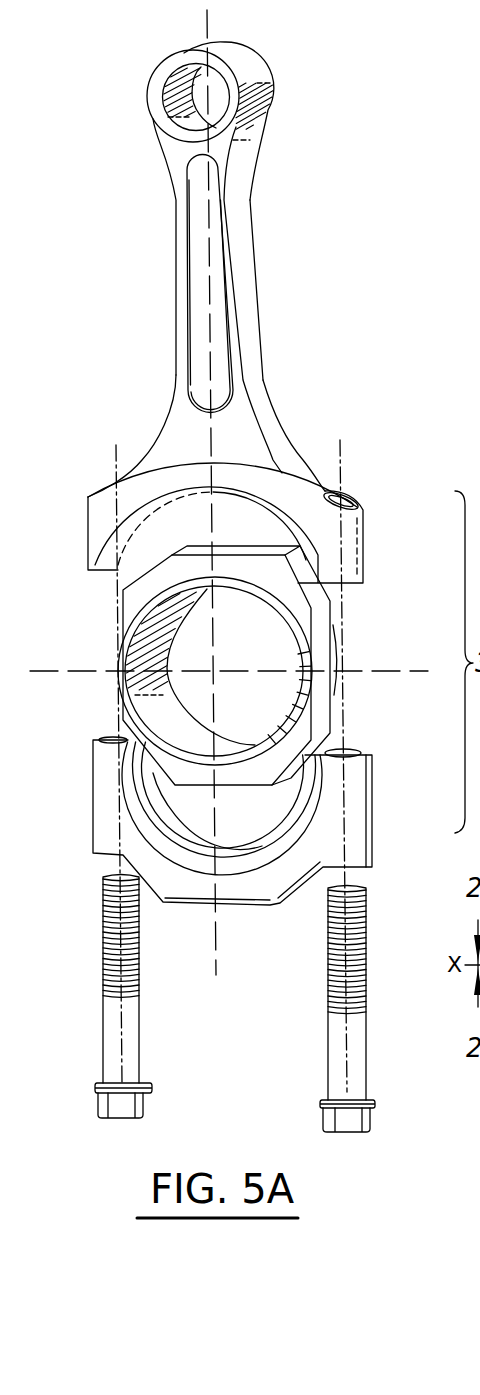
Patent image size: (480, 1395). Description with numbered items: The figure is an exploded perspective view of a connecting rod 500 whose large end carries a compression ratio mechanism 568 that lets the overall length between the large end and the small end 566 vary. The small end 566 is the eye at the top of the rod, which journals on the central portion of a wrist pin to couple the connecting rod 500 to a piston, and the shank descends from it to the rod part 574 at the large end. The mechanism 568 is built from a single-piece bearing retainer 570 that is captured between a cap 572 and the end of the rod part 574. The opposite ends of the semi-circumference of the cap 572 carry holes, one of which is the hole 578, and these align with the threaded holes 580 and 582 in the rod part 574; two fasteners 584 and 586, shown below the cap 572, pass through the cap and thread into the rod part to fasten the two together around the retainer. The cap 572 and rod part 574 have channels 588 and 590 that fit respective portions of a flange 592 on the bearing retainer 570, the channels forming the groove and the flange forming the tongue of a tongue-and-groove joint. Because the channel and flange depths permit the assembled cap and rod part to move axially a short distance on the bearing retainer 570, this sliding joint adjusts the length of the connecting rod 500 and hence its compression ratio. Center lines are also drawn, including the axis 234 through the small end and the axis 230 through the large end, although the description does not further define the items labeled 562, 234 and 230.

The connecting rod 500 is at (425, 78).
The connecting rod 562 is at (330, 258).
The piston pin axis 234 is at (206, 25).
The small end 566 is at (265, 82).
The threaded hole 580 is at (100, 490).
The rod part 574 is at (368, 532).
The threaded hole 582 is at (343, 494).
The channel 590 is at (122, 567).
The flange 592 is at (137, 598).
The bearing retainer 570 is at (338, 642).
The crankpin axis 230 is at (62, 670).
The compression ratio mechanism 568 is at (113, 682).
The hole 578 is at (348, 738).
The cap 572 is at (372, 790).
The channel 588 is at (195, 827).
The fastener 584 is at (147, 1100).
The fastener 586 is at (320, 1117).